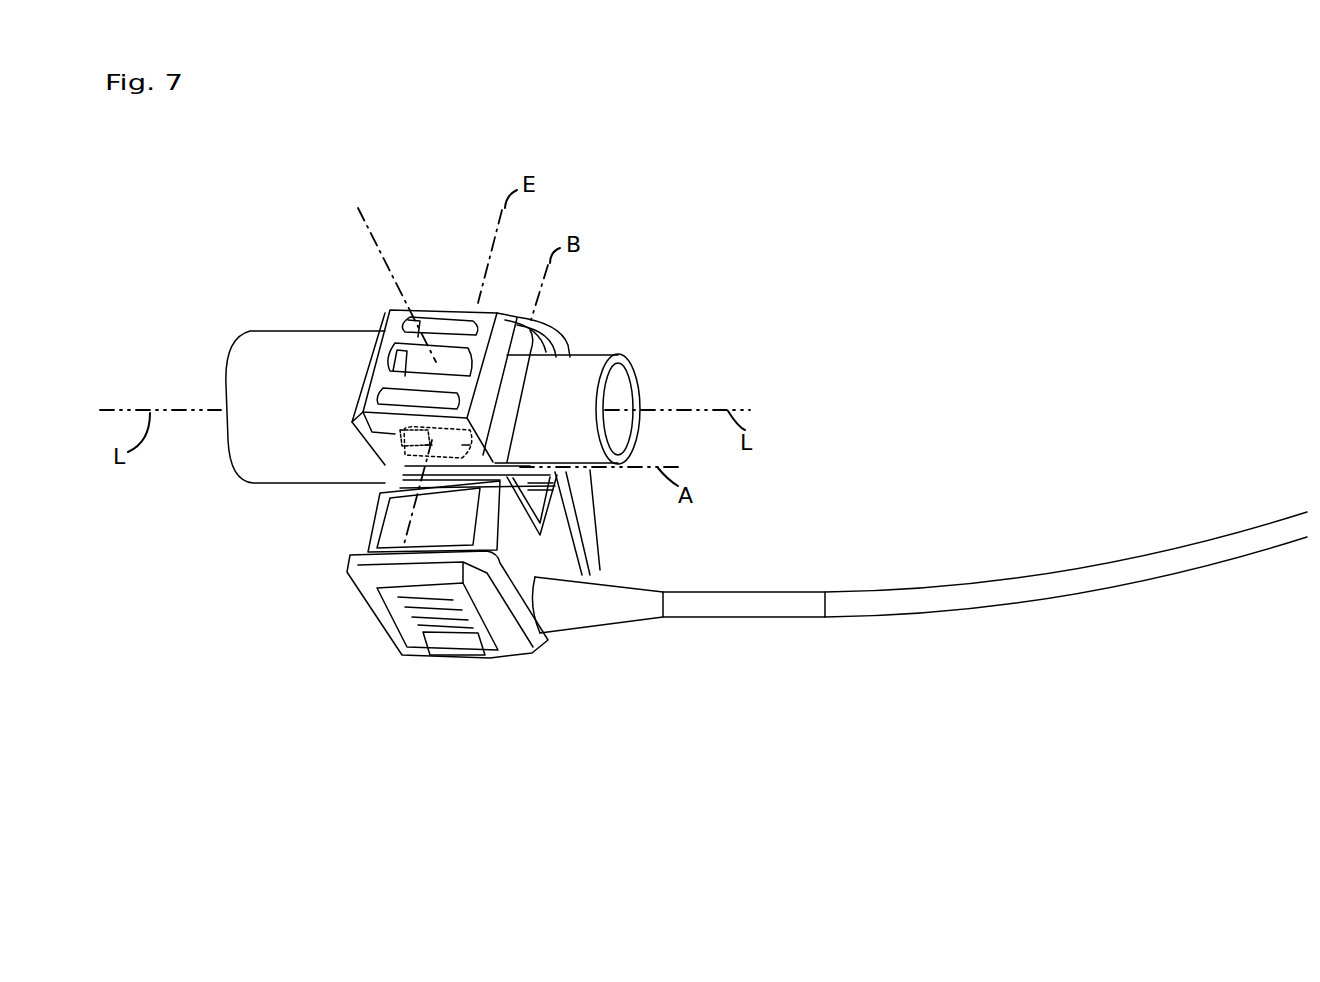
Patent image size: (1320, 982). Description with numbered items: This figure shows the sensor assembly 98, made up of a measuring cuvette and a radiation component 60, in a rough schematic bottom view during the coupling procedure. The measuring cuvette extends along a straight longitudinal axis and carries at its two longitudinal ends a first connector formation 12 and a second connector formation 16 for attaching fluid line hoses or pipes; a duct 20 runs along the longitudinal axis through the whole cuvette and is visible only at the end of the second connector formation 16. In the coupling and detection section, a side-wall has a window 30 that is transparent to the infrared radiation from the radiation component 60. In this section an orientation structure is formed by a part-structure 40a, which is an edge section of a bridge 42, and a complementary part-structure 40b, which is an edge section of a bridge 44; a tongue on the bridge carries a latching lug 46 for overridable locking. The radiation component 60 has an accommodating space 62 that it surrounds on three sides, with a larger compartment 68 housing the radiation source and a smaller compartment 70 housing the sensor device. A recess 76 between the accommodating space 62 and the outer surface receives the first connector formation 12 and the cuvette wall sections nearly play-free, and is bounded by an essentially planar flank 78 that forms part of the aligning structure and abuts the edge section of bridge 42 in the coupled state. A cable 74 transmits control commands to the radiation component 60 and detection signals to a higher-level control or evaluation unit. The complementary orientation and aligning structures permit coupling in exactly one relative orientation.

The sensor assembly 98 is at (212, 222).
The radiation component 60 is at (236, 300).
The first connector formation 12 is at (305, 407).
The second connector formation 16 is at (583, 370).
The duct 20 is at (618, 409).
The smaller compartment 70 is at (525, 318).
The bridge 44 is at (460, 310).
The part-structure 40b is at (438, 318).
The bridge 42 is at (400, 412).
The part-structure 40a is at (380, 428).
The latching lug 46 is at (402, 436).
The window 30 is at (447, 444).
The recess 76 is at (393, 480).
The flank 78 is at (425, 483).
The larger compartment 68 is at (428, 518).
The accommodating space 62 is at (538, 490).
The cable 74 is at (1271, 530).